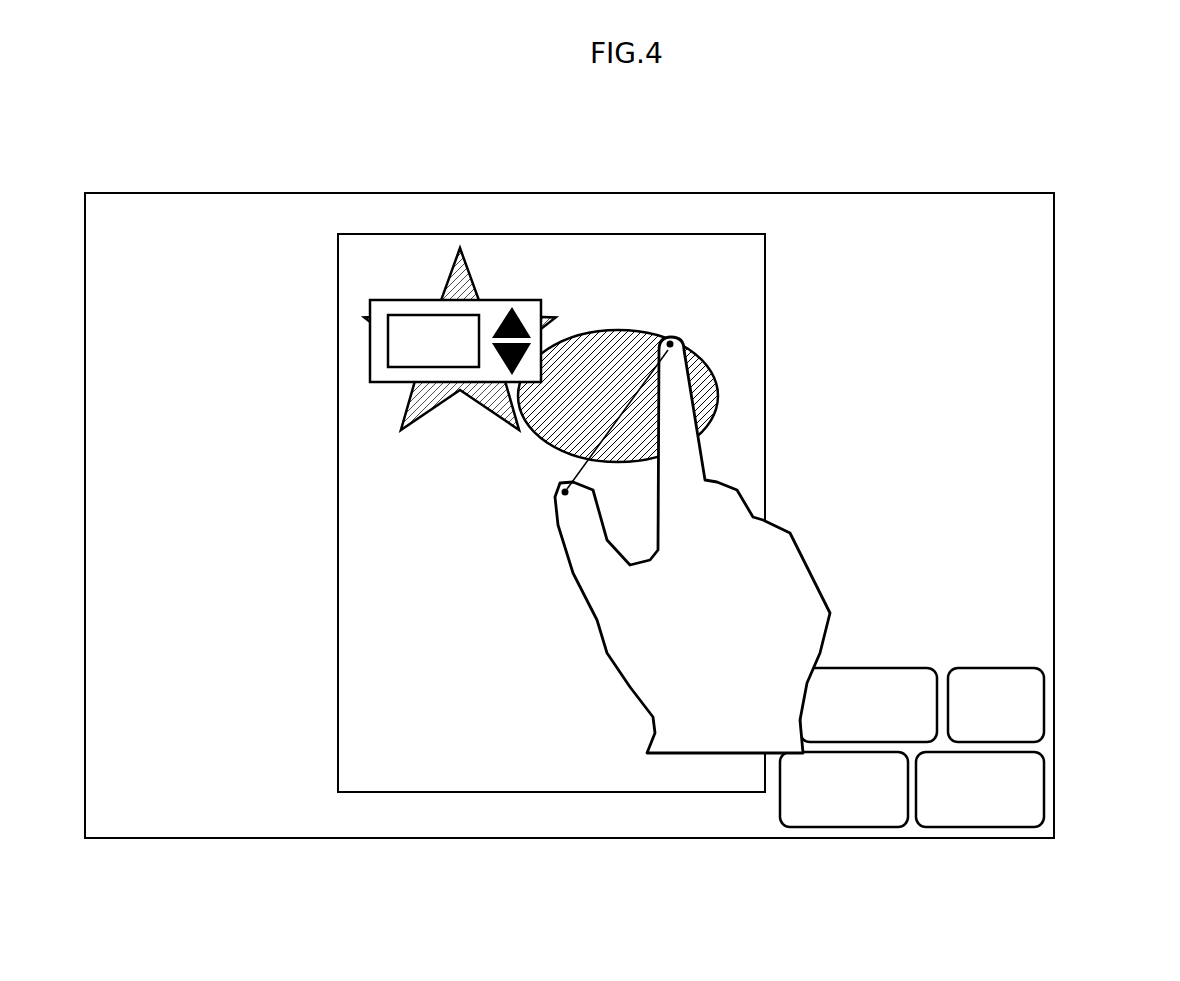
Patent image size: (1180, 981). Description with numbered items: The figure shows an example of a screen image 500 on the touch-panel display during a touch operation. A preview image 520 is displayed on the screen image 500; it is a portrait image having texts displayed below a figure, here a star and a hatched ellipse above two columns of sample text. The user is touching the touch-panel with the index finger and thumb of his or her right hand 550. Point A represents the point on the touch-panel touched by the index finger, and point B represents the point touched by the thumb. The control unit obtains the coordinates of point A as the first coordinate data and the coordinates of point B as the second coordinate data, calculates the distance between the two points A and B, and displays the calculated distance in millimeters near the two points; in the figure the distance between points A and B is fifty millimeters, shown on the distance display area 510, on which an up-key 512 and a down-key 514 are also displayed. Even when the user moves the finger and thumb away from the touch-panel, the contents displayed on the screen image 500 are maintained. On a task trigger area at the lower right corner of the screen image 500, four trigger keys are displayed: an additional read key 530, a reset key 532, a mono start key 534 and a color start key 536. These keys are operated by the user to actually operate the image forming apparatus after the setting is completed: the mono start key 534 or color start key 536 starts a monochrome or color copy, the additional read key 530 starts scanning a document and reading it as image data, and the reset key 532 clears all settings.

The screen image 500 is at (1032, 246).
The distance display area 510 is at (487, 300).
The up-key 512 is at (527, 323).
The down-key 514 is at (527, 358).
The preview image 520 is at (750, 262).
The additional read key 530 is at (892, 672).
The reset key 532 is at (1020, 682).
The mono start key 534 is at (848, 820).
The color start key 536 is at (987, 820).
The right hand 550 is at (715, 743).
The point A is at (678, 342).
The point B is at (568, 491).